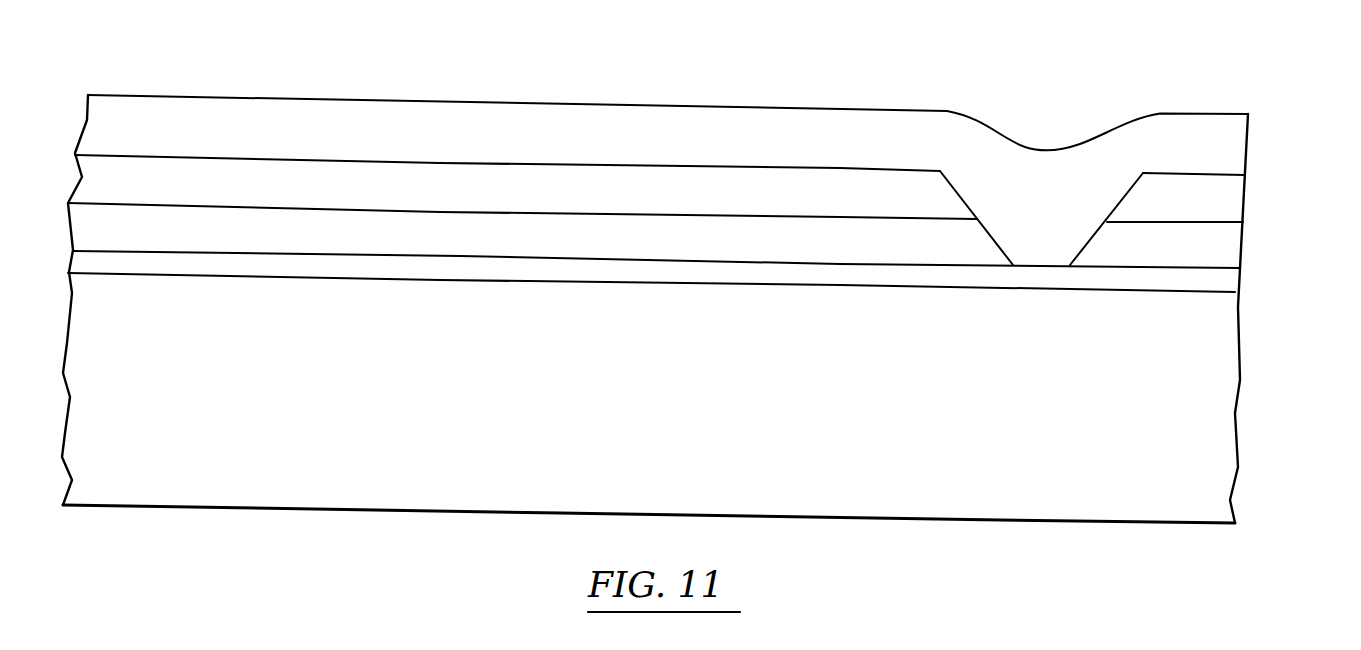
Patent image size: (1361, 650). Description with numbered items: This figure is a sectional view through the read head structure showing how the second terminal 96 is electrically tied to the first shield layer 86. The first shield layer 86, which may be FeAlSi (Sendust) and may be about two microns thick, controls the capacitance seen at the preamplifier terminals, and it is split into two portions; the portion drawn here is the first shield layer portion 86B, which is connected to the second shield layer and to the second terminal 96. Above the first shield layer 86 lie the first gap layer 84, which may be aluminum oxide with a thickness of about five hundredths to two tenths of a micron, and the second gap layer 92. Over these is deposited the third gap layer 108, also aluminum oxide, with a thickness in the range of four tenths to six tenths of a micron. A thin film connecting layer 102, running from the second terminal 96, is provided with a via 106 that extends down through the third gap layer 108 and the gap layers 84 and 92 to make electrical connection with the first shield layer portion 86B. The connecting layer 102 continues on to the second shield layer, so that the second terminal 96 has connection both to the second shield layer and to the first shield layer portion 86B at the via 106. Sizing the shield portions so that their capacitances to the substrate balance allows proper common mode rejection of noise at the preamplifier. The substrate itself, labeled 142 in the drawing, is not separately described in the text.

The first gap layer 84 is at (660, 117).
The second gap layer 92 is at (337, 240).
The first shield layer 86 is at (485, 268).
The first shield layer portion 86B is at (1177, 280).
The thin film connecting layer 102 is at (803, 135).
The third gap layer 108 is at (865, 188).
The via 106 is at (1189, 219).
The second terminal 96 is at (1252, 158).
The substrate (slider) 142 is at (1167, 427).